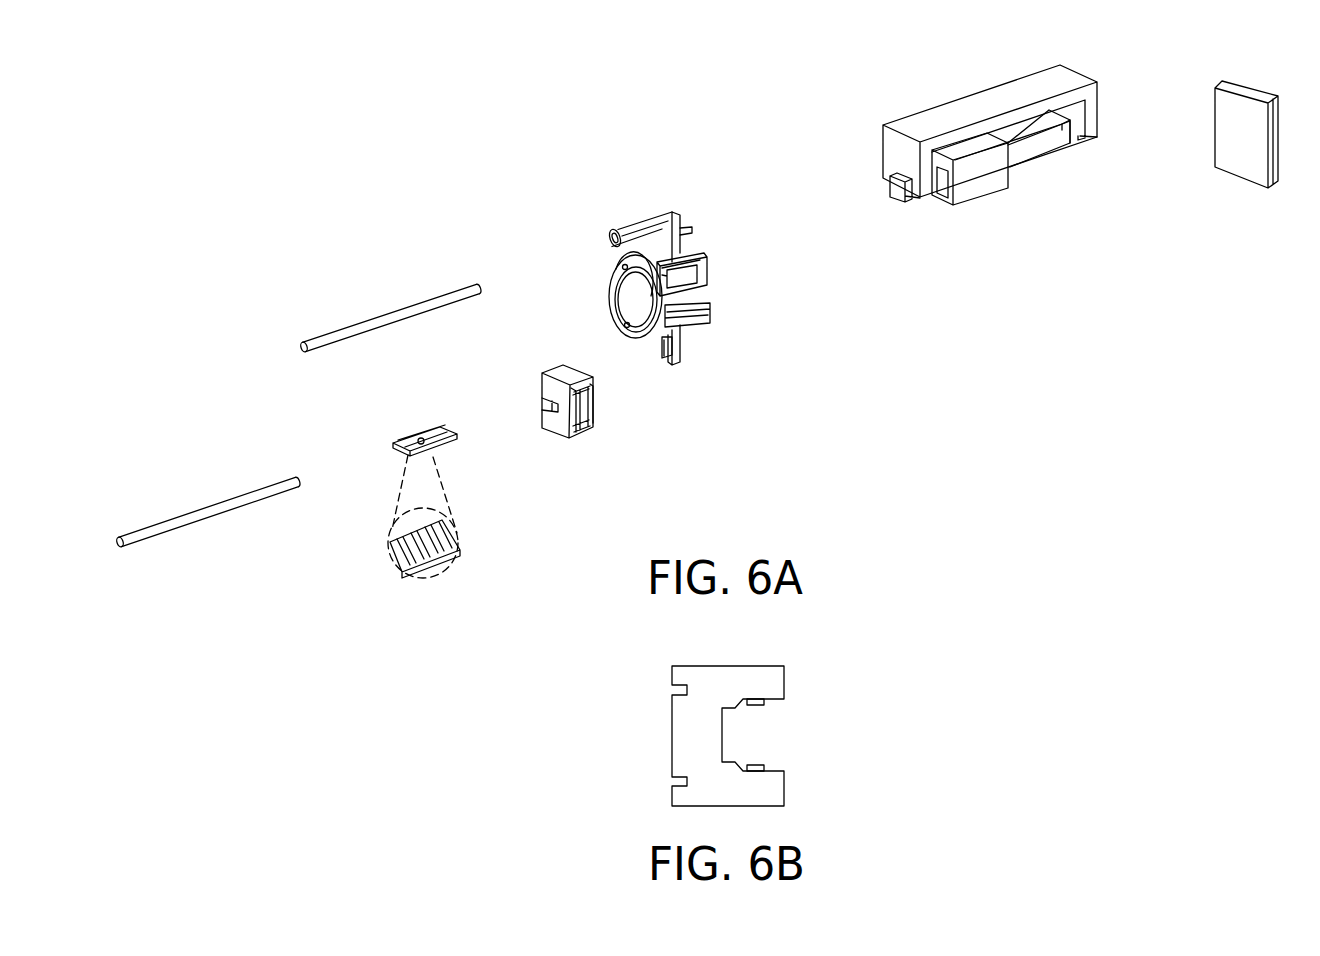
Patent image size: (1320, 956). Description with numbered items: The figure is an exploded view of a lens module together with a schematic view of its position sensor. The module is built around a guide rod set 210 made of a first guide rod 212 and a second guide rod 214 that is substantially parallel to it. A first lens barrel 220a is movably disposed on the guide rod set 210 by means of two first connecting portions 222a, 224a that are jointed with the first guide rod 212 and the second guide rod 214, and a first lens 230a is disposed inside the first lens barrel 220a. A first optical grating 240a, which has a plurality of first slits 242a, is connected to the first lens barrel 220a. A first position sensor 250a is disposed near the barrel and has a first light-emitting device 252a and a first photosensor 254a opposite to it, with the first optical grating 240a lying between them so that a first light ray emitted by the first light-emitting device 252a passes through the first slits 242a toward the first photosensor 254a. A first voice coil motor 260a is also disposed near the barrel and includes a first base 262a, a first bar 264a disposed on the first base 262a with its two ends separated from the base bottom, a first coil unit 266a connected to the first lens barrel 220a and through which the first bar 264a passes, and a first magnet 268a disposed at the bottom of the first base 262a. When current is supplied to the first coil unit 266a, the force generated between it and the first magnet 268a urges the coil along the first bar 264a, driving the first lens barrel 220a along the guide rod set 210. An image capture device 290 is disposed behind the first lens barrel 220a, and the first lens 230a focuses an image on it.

In FIG. 6A, the guide rod set 210 is at (298, 431).
In FIG. 6A, the first guide rod 212 is at (380, 323).
In FIG. 6A, the second guide rod 214 is at (222, 507).
In FIG. 6A, the first lens barrel 220a is at (699, 322).
In FIG. 6A, the first connecting portion 222a is at (652, 228).
In FIG. 6A, the first connecting portion 224a is at (678, 346).
In FIG. 6A, the first lens 230a is at (639, 312).
In FIG. 6A, the first optical grating 240a is at (433, 432).
In FIG. 6A, the first slits 242a is at (430, 536).
In FIG. 6A, the first position sensor 250a is at (553, 422).
In FIG. 6B, the first position sensor 250a is at (890, 842).
In FIG. 6B, the first light-emitting device 252a is at (758, 703).
In FIG. 6B, the first photosensor 254a is at (758, 765).
In FIG. 6A, the first voice coil motor 260a is at (862, 101).
In FIG. 6A, the first base 262a is at (1090, 110).
In FIG. 6A, the first bar 264a is at (1040, 147).
In FIG. 6A, the first coil unit 266a is at (975, 177).
In FIG. 6A, the first magnet 268a is at (1037, 123).
In FIG. 6A, the image capture device 290 is at (1243, 162).